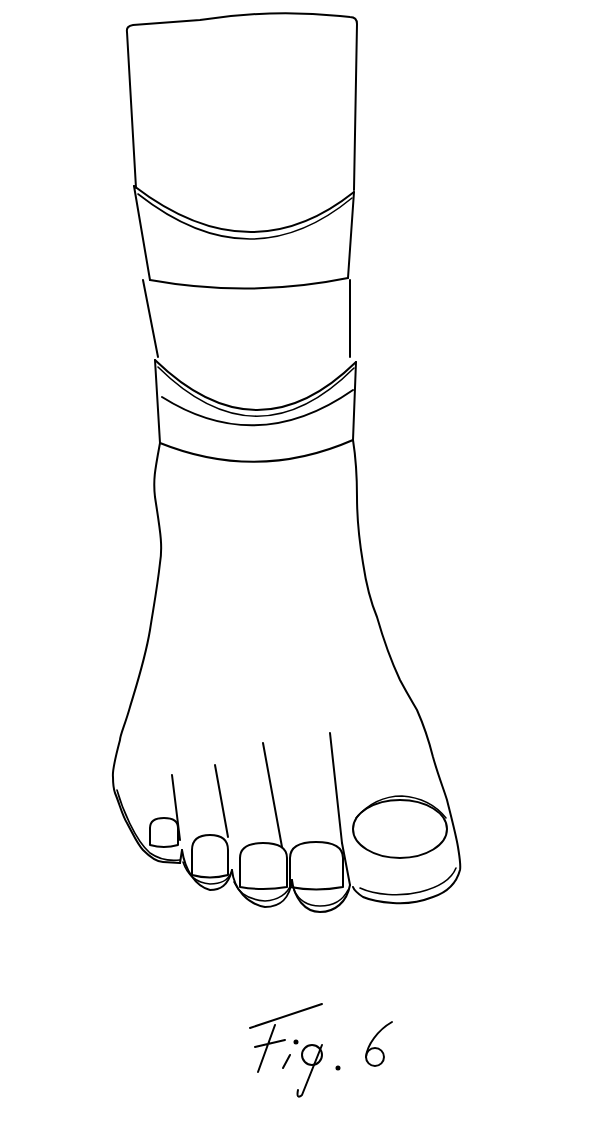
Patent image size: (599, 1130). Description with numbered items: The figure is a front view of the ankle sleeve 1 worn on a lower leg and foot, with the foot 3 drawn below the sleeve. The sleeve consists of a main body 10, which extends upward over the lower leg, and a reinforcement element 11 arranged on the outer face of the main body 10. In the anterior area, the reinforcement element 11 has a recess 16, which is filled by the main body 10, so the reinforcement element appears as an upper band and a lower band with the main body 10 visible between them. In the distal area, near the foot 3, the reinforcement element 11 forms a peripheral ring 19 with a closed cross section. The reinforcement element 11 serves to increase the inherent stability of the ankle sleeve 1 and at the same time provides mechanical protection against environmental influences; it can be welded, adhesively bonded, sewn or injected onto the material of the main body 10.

The ankle sleeve 1 is at (293, 286).
The foot 3 is at (393, 693).
The main body 10 is at (343, 103).
The reinforcement element 11 is at (143, 240).
The recess 16 is at (460, 283).
The peripheral ring 19 is at (309, 411).